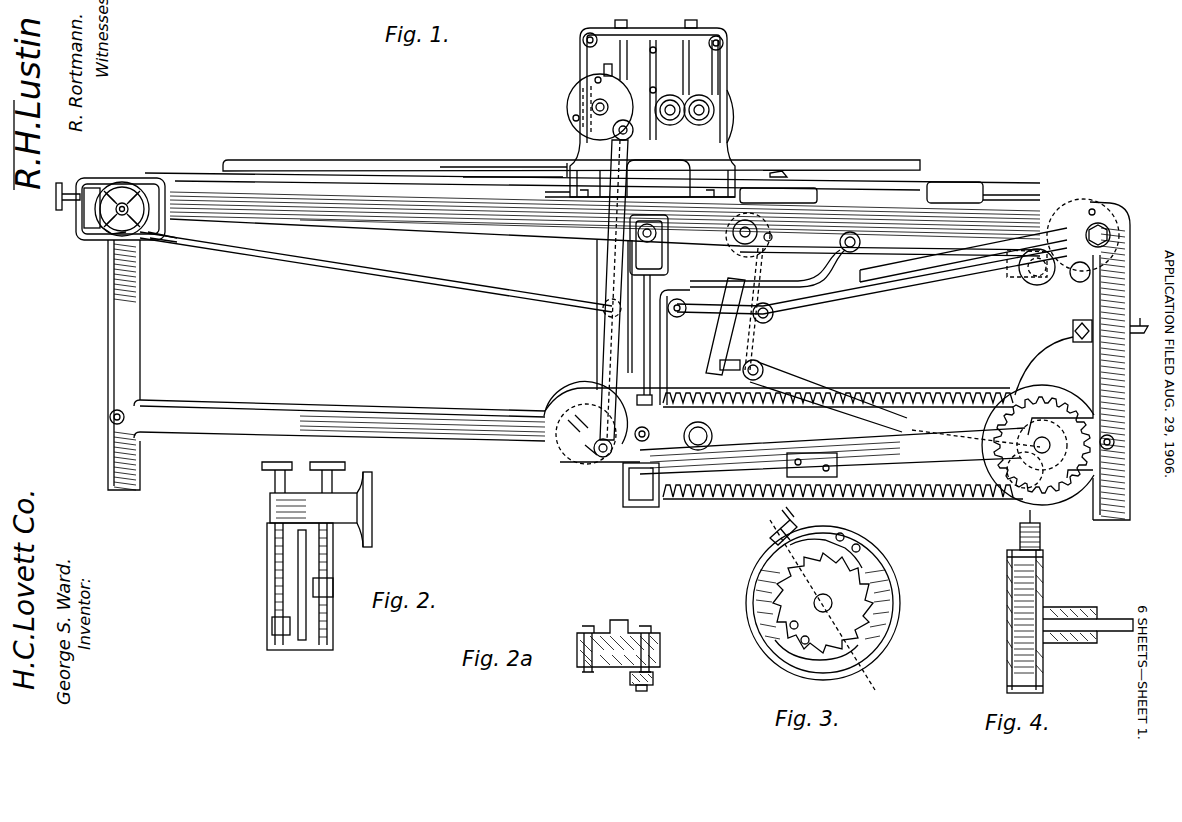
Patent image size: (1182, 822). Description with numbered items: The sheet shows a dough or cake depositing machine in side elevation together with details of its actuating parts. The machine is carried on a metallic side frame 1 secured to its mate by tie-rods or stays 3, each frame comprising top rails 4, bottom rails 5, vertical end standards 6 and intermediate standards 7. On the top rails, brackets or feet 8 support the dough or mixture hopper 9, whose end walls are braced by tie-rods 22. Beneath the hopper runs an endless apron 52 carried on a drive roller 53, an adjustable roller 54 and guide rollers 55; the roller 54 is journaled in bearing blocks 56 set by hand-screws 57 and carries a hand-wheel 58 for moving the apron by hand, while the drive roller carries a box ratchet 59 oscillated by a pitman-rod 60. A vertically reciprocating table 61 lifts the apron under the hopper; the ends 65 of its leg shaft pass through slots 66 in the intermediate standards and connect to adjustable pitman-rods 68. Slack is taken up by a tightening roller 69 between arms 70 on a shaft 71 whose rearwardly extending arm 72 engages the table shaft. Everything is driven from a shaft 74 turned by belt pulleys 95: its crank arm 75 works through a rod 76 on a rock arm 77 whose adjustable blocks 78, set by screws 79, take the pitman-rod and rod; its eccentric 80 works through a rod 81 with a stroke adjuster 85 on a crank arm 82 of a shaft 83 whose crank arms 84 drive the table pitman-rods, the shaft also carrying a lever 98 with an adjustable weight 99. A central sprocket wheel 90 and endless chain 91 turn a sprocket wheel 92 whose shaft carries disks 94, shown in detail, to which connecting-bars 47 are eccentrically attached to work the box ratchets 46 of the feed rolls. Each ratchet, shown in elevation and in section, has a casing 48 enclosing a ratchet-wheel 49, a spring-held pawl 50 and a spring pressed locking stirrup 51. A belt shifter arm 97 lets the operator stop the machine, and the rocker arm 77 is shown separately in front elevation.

In FIG. 1, the side frame 1 is at (354, 334).
In FIG. 1, the tie-rods or stays 3 is at (108, 422).
In FIG. 1, the top rails 4 is at (404, 220).
In FIG. 1, the bottom rails 5 is at (370, 412).
In FIG. 1, the vertical end standards 6 is at (108, 334).
In FIG. 1, the intermediate standards 7 is at (668, 350).
In FIG. 1, the brackets or feet 8 is at (573, 165).
In FIG. 1, the dough or mixture hopper 9 is at (660, 81).
In FIG. 1, the tie-rods 22 is at (583, 42).
In FIG. 1, the box ratchets 46 is at (575, 108).
In FIG. 4, the box ratchets 46 is at (1006, 580).
In FIG. 1, the connecting-bars 47 is at (610, 342).
In FIG. 2A, the connecting-bars 47 is at (654, 678).
In FIG. 3, the casing 48 is at (902, 604).
In FIG. 4, the casing 48 is at (1030, 692).
In FIG. 3, the ratchet-wheel 49 is at (858, 600).
In FIG. 4, the ratchet-wheel 49 is at (1014, 608).
In FIG. 3, the spring-held pawl 50 is at (862, 545).
In FIG. 3, the spring pressed locking stirrup 51 is at (775, 545).
In FIG. 1, the endless apron 52 is at (470, 284).
In FIG. 1, the roller 53 is at (1080, 205).
In FIG. 1, the roller 54 is at (130, 180).
In FIG. 1, the rollers 55 is at (602, 310).
In FIG. 1, the bearing blocks 56 is at (104, 230).
In FIG. 1, the hand-screws 57 is at (62, 212).
In FIG. 1, the hand-wheel 58 is at (146, 238).
In FIG. 1, the box ratchet 59 is at (1102, 220).
In FIG. 1, the pitman-rod 60 is at (985, 282).
In FIG. 1, the vertically reciprocating table 61 is at (975, 195).
In FIG. 1, the shaft ends 65 is at (638, 237).
In FIG. 1, the slots 66 is at (670, 260).
In FIG. 1, the adjustable pitman-rods 68 is at (652, 372).
In FIG. 1, the adjustable tightening roller 69 is at (1040, 285).
In FIG. 1, the arms 70 is at (965, 255).
In FIG. 1, the shaft 71 is at (848, 253).
In FIG. 1, the central rearwardly extending arm 72 is at (838, 255).
In FIG. 1, the shaft 74 is at (1000, 470).
In FIG. 1, the crank arm 75 is at (1050, 462).
In FIG. 1, the rod 76 is at (835, 392).
In FIG. 1, the rock arm 77 is at (728, 326).
In FIG. 2, the rock arm 77 is at (272, 574).
In FIG. 1, the adjustable blocks 78 is at (760, 362).
In FIG. 2, the adjustable blocks 78 is at (330, 584).
In FIG. 1, the screws 79 is at (768, 264).
In FIG. 2, the screws 79 is at (278, 534).
In FIG. 1, the eccentric 80 is at (1046, 436).
In FIG. 1, the rod 81 is at (855, 392).
In FIG. 1, the crank arm 82 is at (623, 488).
In FIG. 1, the shaft 83 is at (697, 448).
In FIG. 1, the crank arms 84 is at (662, 458).
In FIG. 1, the stroke adjuster 85 is at (790, 385).
In FIG. 1, the central sprocket wheel 90 is at (1030, 470).
In FIG. 1, the endless chain 91 is at (975, 390).
In FIG. 1, the sprocket wheel 92 is at (583, 468).
In FIG. 1, the disks 94 is at (560, 448).
In FIG. 2A, the disks 94 is at (607, 668).
In FIG. 1, the belt pulleys 95 is at (1082, 500).
In FIG. 1, the arm 97 is at (1146, 314).
In FIG. 1, the lever 98 is at (758, 474).
In FIG. 1, the adjustable weight 99 is at (840, 478).